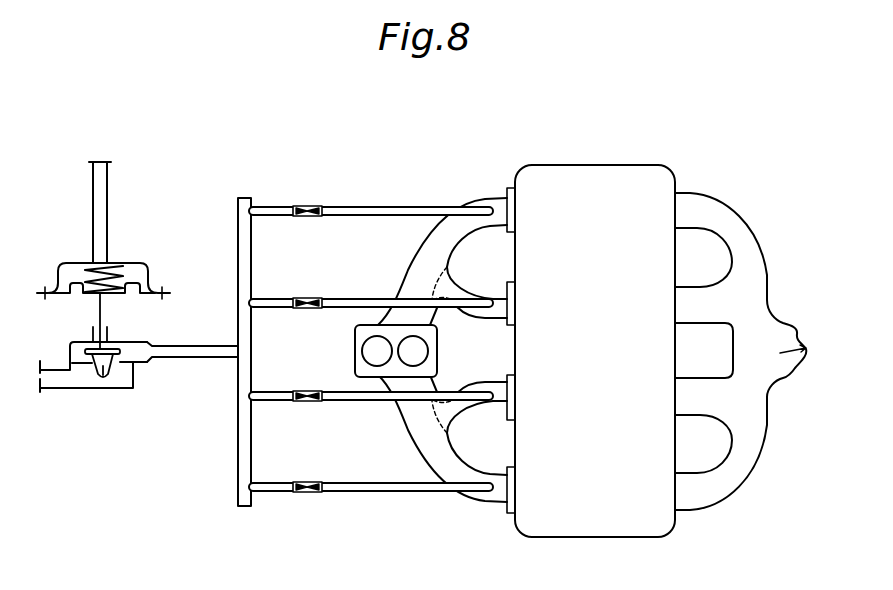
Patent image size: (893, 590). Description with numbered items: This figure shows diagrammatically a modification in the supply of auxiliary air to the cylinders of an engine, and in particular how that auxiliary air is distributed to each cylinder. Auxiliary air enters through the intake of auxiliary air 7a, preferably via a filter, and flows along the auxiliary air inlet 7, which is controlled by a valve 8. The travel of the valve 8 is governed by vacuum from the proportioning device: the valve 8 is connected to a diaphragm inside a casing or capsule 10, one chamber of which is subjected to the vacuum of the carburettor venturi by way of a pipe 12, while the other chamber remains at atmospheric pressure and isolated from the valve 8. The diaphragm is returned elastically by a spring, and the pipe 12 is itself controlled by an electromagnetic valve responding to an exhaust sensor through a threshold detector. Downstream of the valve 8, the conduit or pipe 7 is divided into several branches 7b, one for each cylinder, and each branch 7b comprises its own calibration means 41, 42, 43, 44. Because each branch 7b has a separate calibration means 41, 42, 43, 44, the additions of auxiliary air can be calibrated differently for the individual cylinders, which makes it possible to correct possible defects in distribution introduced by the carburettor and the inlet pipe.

The auxiliary air inlet 7 is at (178, 355).
The intake of auxiliary air 7a is at (56, 384).
The branches 7b is at (382, 212).
The valve 8 is at (103, 378).
The casing or capsule 10 is at (133, 262).
The pipe 12 is at (112, 190).
The calibration means 41 is at (308, 203).
The calibration means 42 is at (307, 297).
The calibration means 43 is at (307, 385).
The calibration means 44 is at (307, 480).